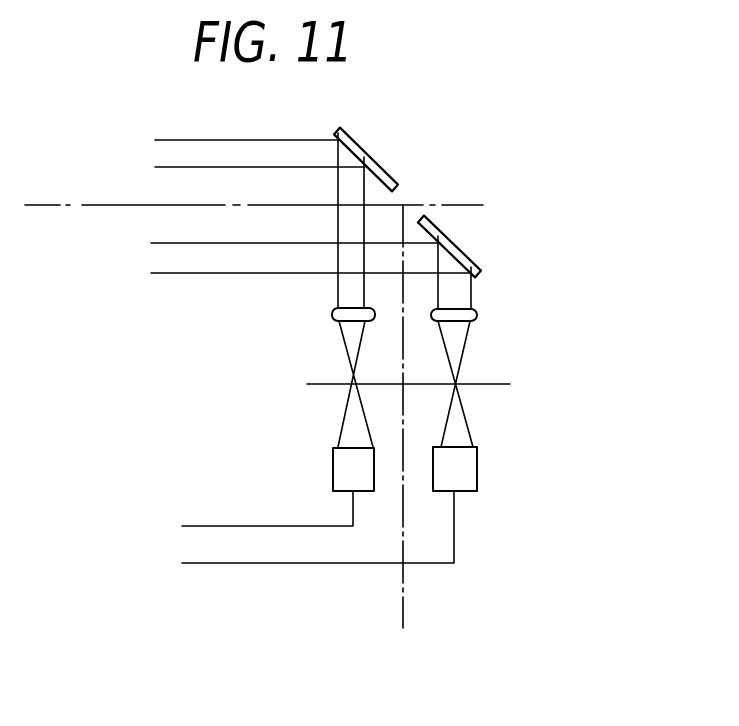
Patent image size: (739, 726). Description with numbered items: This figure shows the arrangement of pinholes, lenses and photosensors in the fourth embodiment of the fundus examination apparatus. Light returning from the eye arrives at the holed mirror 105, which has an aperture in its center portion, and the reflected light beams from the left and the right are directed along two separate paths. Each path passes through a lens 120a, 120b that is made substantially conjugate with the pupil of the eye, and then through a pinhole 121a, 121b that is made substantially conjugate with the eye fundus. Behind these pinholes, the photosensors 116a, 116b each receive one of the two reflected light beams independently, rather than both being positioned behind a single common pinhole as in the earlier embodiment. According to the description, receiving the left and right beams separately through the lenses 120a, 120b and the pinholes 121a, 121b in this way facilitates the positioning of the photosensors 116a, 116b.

The holed mirror 105 is at (355, 137).
The lens 120b is at (333, 318).
The lens 120a is at (479, 313).
The pinhole 121b is at (310, 386).
The pinhole 121a is at (506, 386).
The photosensor 116b is at (333, 470).
The photosensor 116a is at (477, 463).